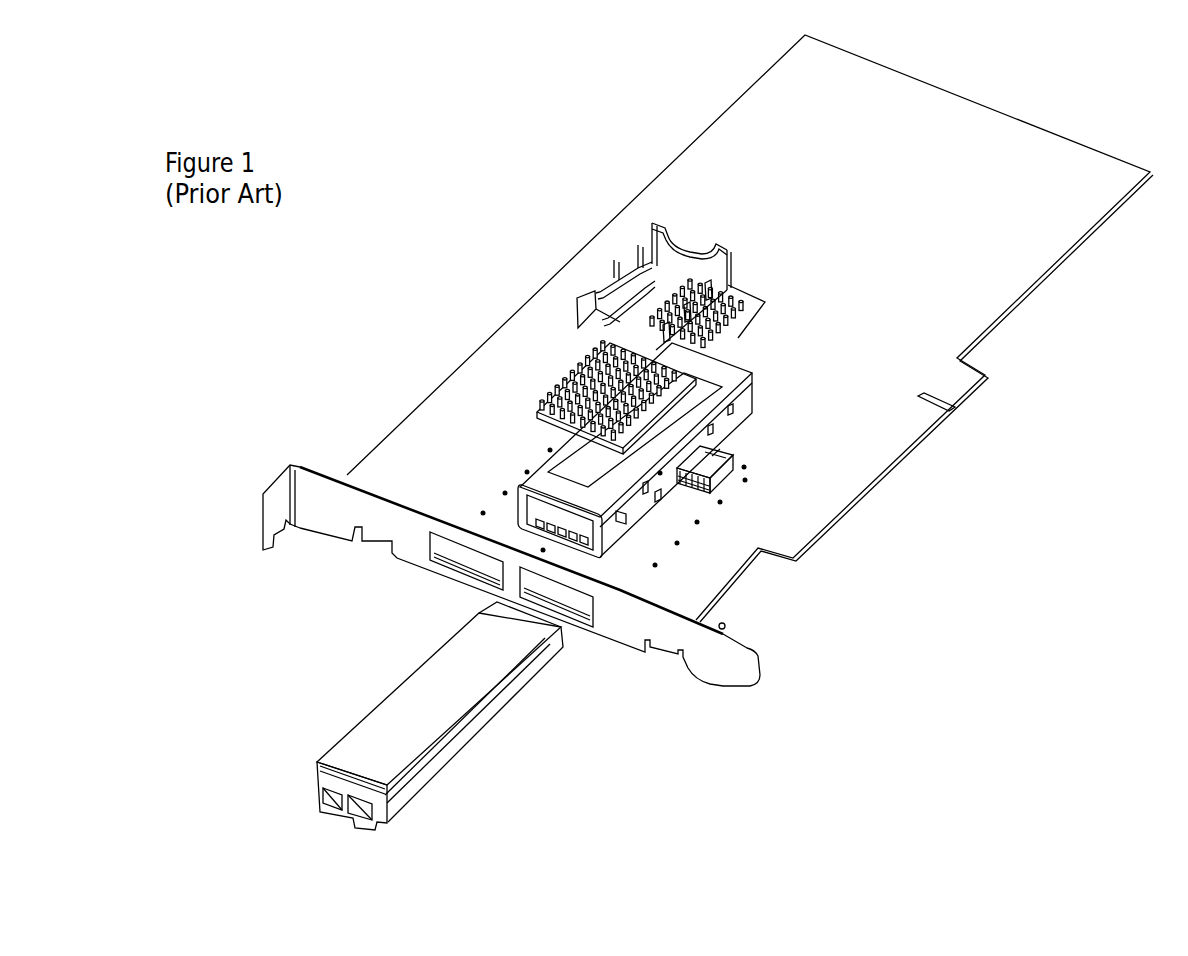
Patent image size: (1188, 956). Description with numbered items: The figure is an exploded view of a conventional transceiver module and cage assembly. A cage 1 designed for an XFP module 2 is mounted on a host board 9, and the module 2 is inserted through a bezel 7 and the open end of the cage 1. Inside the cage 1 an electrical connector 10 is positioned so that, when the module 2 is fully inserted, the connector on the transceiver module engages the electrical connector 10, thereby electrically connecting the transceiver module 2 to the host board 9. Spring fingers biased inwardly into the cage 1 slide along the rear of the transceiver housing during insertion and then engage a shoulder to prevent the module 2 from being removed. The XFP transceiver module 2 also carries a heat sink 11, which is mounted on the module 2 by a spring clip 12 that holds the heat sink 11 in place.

The host board 9 is at (741, 204).
The bezel 7 is at (744, 674).
The XFP module 2 is at (500, 703).
The cage 1 is at (561, 479).
The heat sink 11 is at (561, 383).
The spring clip 12 is at (627, 263).
The electrical connector 10 is at (747, 495).